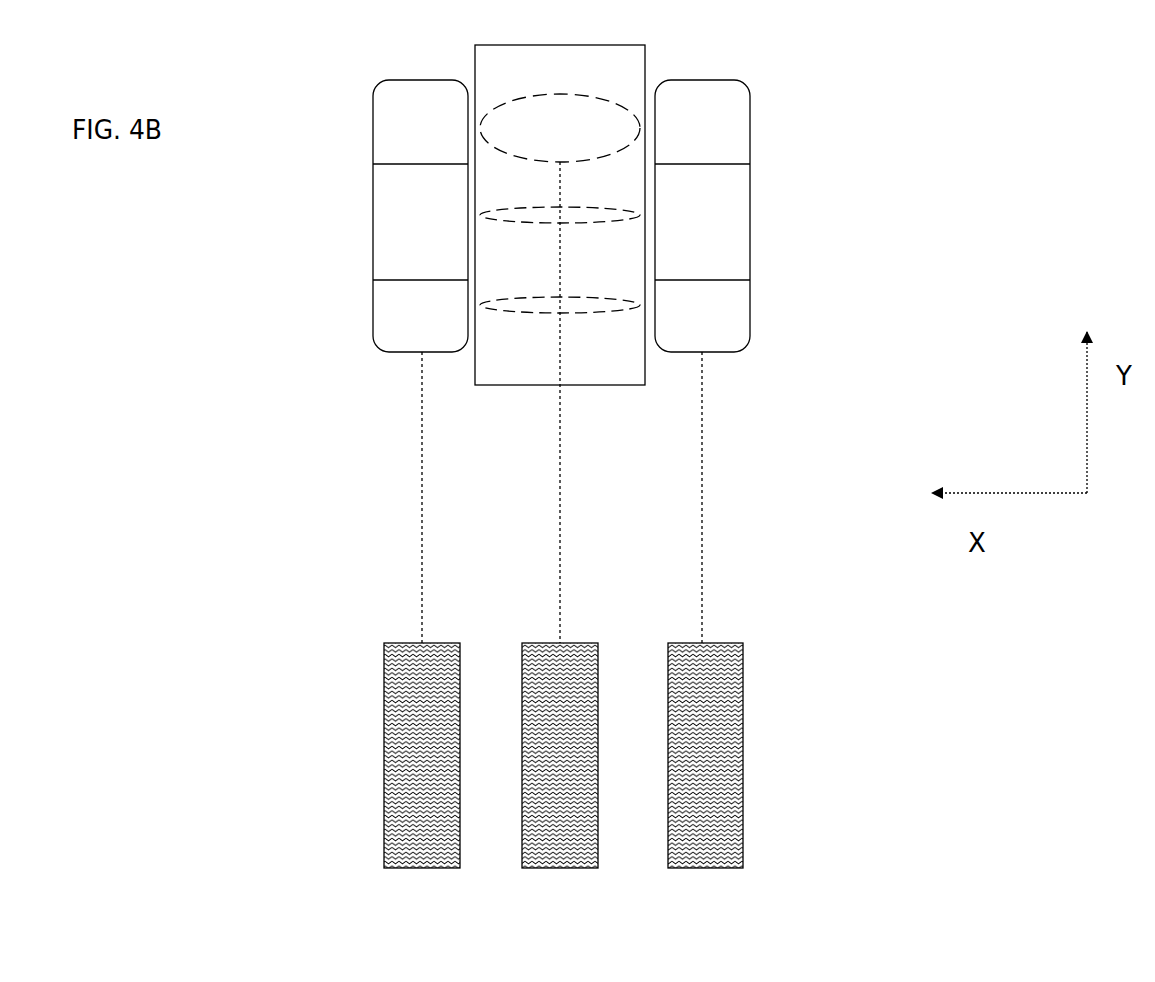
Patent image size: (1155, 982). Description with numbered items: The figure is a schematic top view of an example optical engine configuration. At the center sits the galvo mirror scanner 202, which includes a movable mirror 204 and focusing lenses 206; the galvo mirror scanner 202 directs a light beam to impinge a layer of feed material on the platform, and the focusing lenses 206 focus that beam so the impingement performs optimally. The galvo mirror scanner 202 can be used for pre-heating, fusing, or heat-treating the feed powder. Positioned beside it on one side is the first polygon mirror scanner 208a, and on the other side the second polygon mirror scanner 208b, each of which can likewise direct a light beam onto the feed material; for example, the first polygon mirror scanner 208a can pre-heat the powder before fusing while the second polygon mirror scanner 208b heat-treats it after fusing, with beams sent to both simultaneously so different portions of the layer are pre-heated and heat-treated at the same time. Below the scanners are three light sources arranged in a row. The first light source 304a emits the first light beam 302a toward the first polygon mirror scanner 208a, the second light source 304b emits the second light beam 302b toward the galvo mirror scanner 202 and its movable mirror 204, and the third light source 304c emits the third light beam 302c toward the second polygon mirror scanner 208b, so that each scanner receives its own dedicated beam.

The galvo mirror scanner 202 is at (617, 232).
The movable mirror 204 is at (584, 143).
The focusing lenses 206 is at (592, 344).
The first polygon mirror scanner 208a is at (380, 206).
The second polygon mirror scanner 208b is at (735, 220).
The first light beam 302a is at (425, 535).
The second light beam 302b is at (558, 495).
The third light beam 302c is at (695, 512).
The first light source 304a is at (384, 757).
The second light source 304b is at (560, 868).
The third light source 304c is at (743, 757).